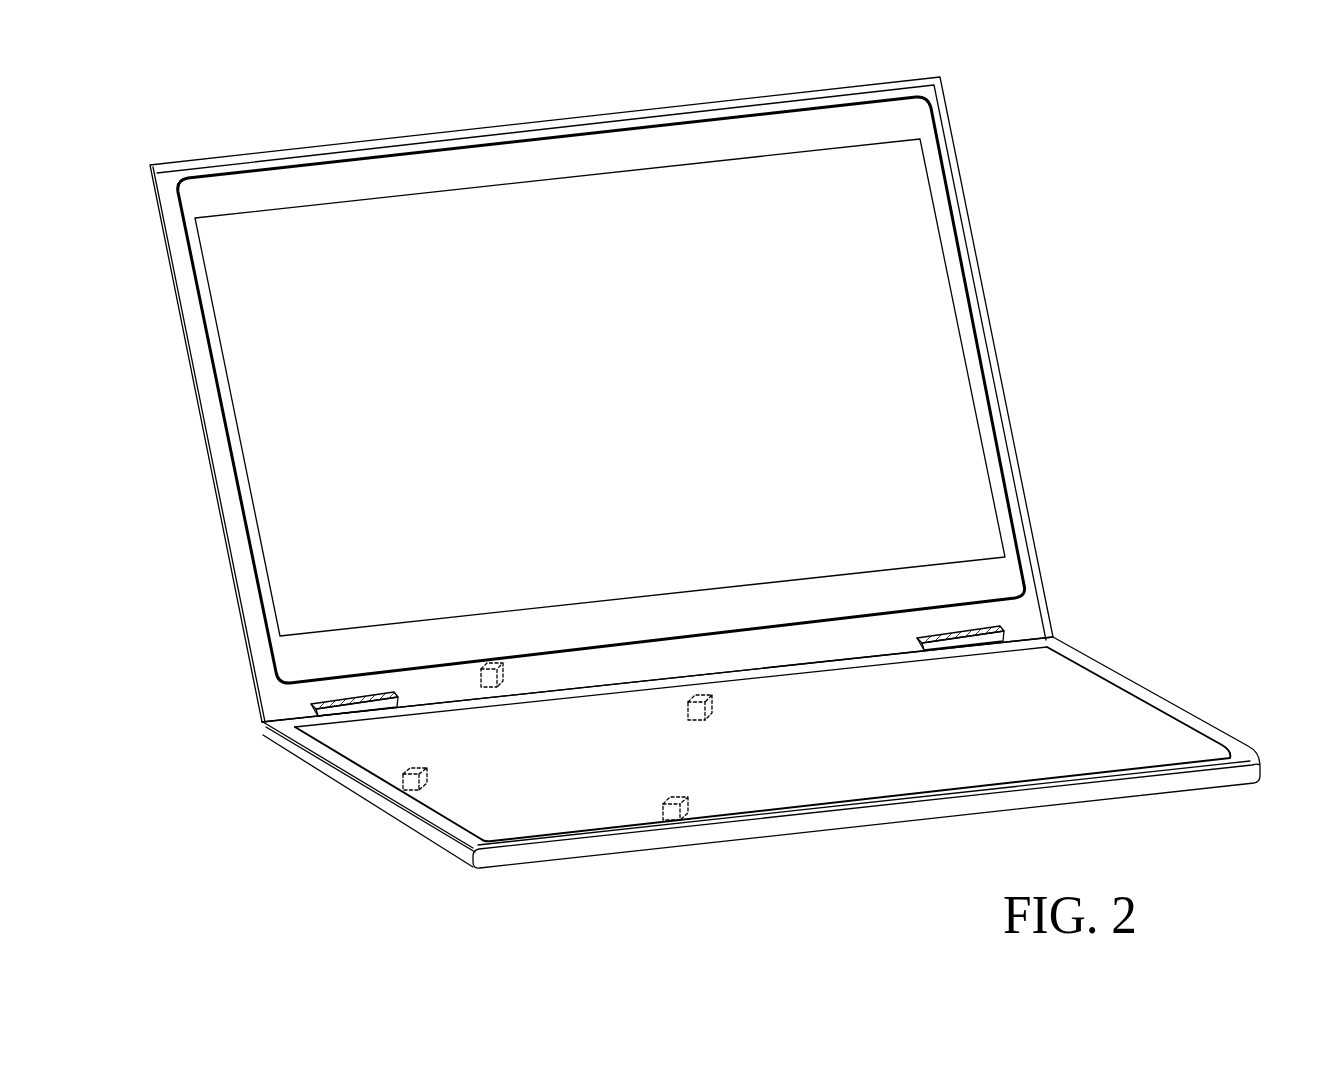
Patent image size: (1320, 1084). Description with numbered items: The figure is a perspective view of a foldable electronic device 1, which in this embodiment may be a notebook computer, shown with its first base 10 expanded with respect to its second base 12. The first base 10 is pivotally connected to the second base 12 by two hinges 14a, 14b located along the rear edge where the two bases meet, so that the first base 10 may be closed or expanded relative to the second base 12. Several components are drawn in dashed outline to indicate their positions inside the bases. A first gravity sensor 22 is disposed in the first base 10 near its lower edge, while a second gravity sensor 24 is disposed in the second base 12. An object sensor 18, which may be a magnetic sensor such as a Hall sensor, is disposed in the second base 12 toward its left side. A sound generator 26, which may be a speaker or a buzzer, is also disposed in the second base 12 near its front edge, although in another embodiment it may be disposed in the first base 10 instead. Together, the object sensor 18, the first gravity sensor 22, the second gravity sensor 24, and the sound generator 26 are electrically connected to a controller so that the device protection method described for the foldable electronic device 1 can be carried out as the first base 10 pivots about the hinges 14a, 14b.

The foldable electronic device 1 is at (1095, 133).
The first base 10 is at (327, 145).
The second base 12 is at (1152, 702).
The hinge 14a is at (352, 708).
The hinge 14b is at (960, 638).
The object sensor 18 is at (404, 780).
The first gravity sensor 22 is at (487, 668).
The second gravity sensor 24 is at (707, 714).
The sound generator 26 is at (676, 822).